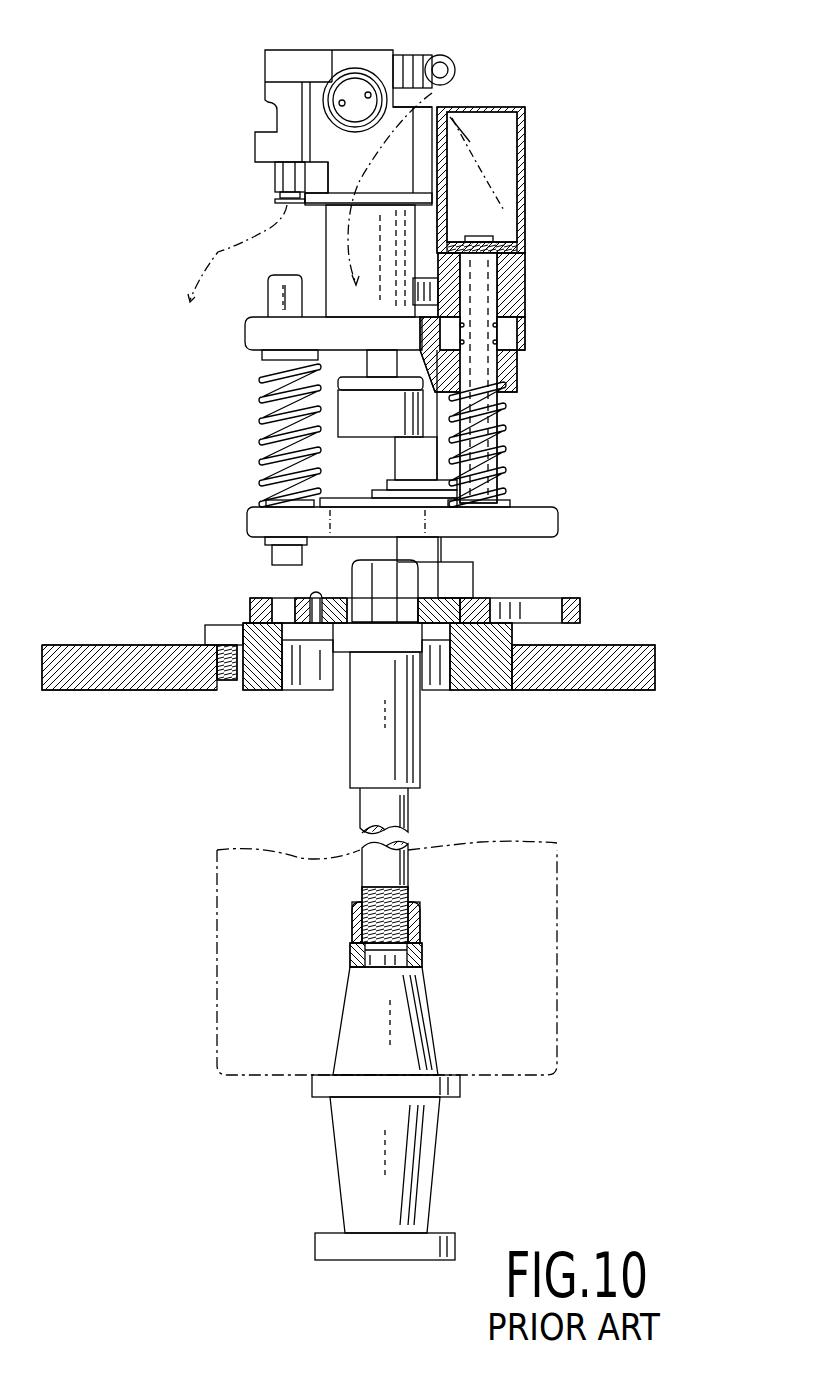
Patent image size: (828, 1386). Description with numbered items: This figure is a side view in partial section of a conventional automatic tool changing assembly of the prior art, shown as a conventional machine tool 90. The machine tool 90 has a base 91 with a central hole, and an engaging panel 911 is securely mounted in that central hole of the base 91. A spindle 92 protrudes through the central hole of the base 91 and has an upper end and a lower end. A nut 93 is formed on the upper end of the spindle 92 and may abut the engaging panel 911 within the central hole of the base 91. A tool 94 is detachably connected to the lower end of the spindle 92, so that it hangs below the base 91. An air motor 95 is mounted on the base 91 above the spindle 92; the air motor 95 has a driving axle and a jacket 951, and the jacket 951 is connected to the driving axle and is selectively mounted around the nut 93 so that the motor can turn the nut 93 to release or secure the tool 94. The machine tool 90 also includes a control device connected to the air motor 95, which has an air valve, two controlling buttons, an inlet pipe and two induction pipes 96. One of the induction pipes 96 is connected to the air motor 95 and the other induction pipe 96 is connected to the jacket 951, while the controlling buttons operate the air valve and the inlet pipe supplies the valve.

The conventional machine tool 90 is at (580, 294).
The base 91 is at (163, 645).
The engaging panel 911 is at (450, 608).
The spindle 92 is at (365, 731).
The nut 93 is at (355, 583).
The tool 94 is at (355, 996).
The air motor 95 is at (375, 58).
The jacket 951 is at (312, 412).
The induction pipes 96 is at (218, 252).